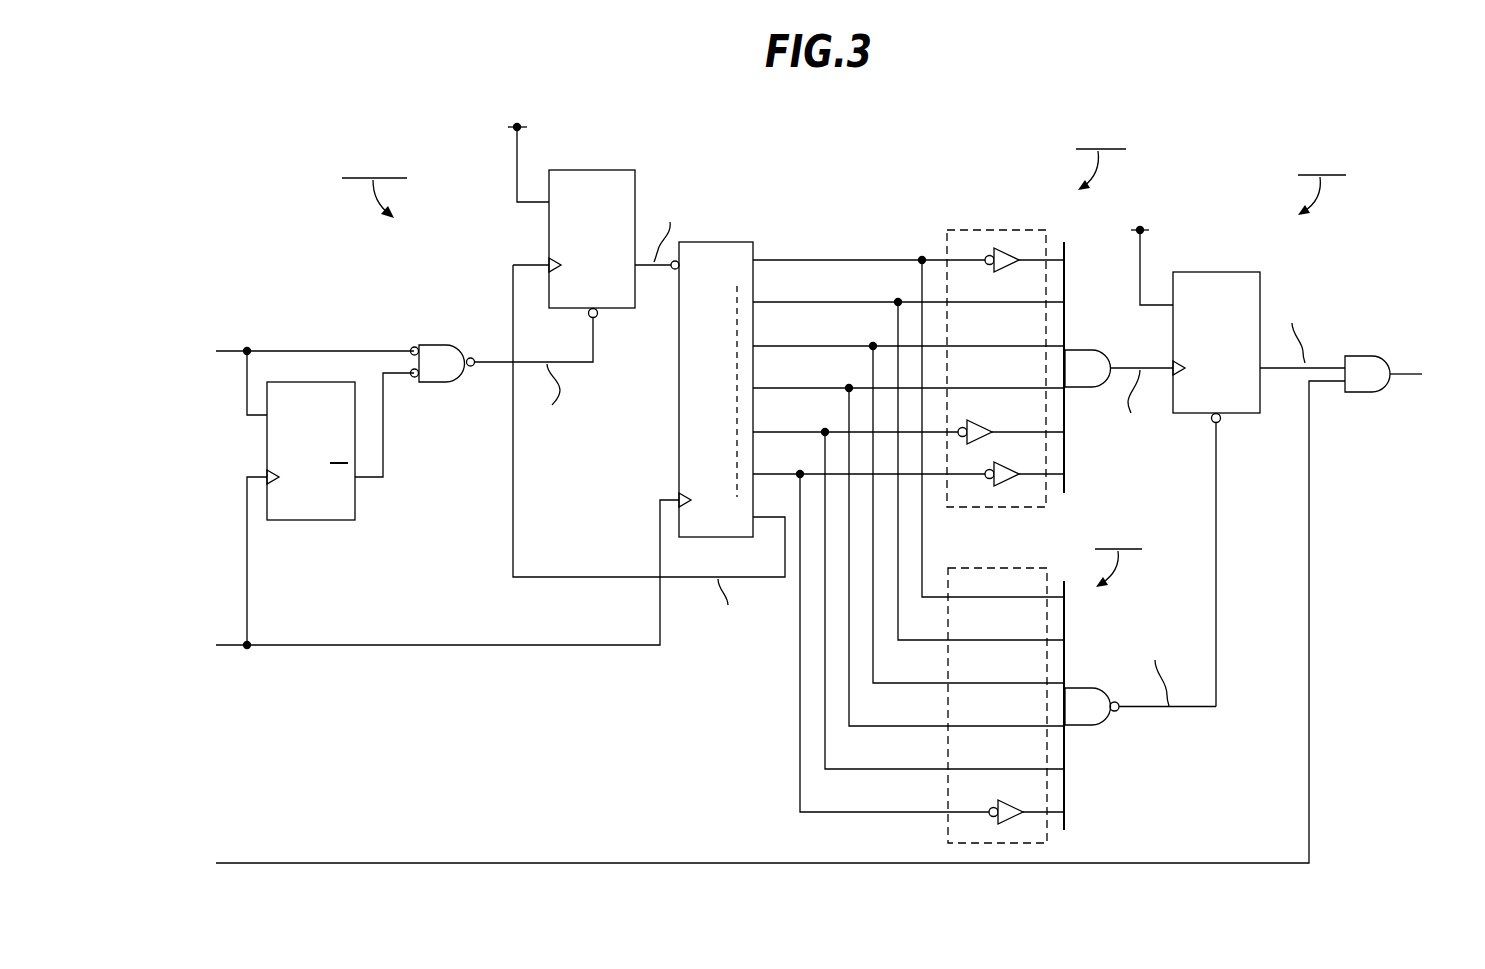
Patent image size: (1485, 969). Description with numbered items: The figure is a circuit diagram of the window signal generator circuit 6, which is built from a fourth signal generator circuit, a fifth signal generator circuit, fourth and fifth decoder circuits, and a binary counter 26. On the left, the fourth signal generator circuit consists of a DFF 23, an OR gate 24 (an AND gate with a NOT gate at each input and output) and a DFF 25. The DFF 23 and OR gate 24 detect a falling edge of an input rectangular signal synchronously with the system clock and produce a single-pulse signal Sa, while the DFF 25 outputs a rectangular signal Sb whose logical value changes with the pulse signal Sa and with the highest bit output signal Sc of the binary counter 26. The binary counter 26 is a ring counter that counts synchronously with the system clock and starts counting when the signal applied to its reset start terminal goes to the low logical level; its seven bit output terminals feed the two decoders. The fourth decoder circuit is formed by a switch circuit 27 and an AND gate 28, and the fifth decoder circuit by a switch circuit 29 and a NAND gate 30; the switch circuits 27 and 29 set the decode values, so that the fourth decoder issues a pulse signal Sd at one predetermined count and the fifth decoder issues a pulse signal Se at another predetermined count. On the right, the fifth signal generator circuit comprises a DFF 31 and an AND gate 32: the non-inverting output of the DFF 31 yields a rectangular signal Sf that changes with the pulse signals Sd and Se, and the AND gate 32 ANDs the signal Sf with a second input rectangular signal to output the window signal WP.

The window signal generator circuit 6 is at (1162, 113).
The DFF 23 is at (315, 522).
The OR gate 24 is at (431, 343).
The DFF 25 is at (591, 170).
The binary counter 26 is at (717, 242).
The switch circuit 27 is at (998, 230).
The AND gate 28 is at (1080, 348).
The switch circuit 29 is at (998, 568).
The NAND gate 30 is at (1080, 686).
The DFF 31 is at (1216, 272).
The AND gate 32 is at (1360, 355).